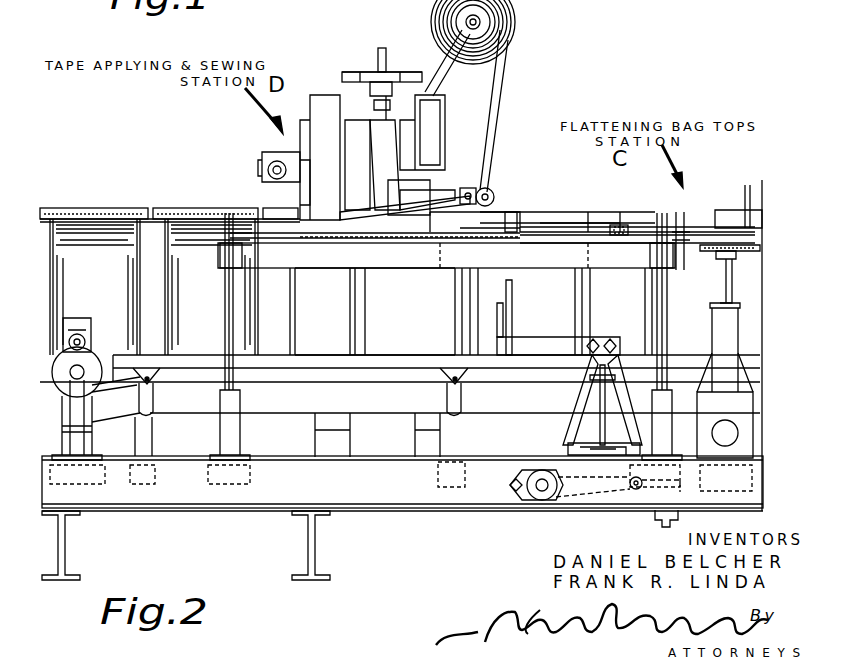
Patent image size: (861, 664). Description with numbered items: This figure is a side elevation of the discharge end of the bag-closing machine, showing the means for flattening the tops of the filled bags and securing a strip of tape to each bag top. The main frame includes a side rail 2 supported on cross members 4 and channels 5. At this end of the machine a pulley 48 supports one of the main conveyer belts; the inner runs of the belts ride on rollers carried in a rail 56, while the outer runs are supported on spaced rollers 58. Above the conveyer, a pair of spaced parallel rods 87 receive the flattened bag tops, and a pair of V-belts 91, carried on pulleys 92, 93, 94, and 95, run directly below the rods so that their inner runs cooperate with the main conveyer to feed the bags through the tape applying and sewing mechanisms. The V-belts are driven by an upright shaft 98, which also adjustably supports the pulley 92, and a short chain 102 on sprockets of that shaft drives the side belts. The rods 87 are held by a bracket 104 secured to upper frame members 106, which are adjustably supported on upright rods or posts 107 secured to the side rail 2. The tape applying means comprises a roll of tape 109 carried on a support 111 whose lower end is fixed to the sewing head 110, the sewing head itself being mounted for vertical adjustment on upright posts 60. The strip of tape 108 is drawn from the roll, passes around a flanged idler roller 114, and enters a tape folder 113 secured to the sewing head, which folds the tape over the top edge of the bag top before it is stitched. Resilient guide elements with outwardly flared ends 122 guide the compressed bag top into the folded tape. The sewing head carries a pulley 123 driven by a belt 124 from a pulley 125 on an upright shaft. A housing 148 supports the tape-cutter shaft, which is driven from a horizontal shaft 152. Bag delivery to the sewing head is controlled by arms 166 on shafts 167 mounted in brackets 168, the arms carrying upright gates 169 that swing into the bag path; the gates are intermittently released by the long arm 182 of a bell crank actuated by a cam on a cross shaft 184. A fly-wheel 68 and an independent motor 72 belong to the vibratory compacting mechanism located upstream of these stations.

The side rail 2 is at (398, 490).
The cross members 4 is at (66, 553).
The channels 5 is at (77, 318).
The pulley 48 is at (60, 380).
The rail 56 is at (292, 385).
The spaced rollers 58 is at (152, 398).
The upright posts 60 is at (318, 105).
The fly-wheel 68 is at (396, 8).
The independent motor 72 is at (593, 8).
The rods 87 is at (552, 218).
The V-belts 91 is at (570, 226).
The pulley 92 is at (748, 212).
The pulley 93 is at (688, 215).
The pulley 94 is at (492, 242).
The pulley 95 is at (262, 266).
The upright shaft 98 is at (736, 276).
The short chain 102 is at (755, 250).
The bracket 104 is at (630, 215).
The upper frame members 106 is at (433, 260).
The upright rods or posts 107 is at (226, 305).
The strip of tape 108 is at (100, 208).
The roll of tape 109 is at (498, 30).
The sewing head 110 is at (341, 70).
The support 111 is at (440, 82).
The tape folder 113 is at (441, 201).
The flanged idler roller 114 is at (492, 192).
The outwardly flared ends 122 is at (517, 212).
The pulley 123 is at (400, 70).
The belt 124 is at (342, 78).
The pulley 125 is at (342, 72).
The housing 148 is at (274, 158).
The horizontal shaft 152 is at (266, 168).
The arms 166 is at (545, 337).
The shafts 167 is at (586, 436).
The brackets 168 is at (600, 420).
The upright plates (gates) 169 is at (496, 313).
The long arm 182 is at (596, 505).
The cross shaft 184 is at (540, 490).